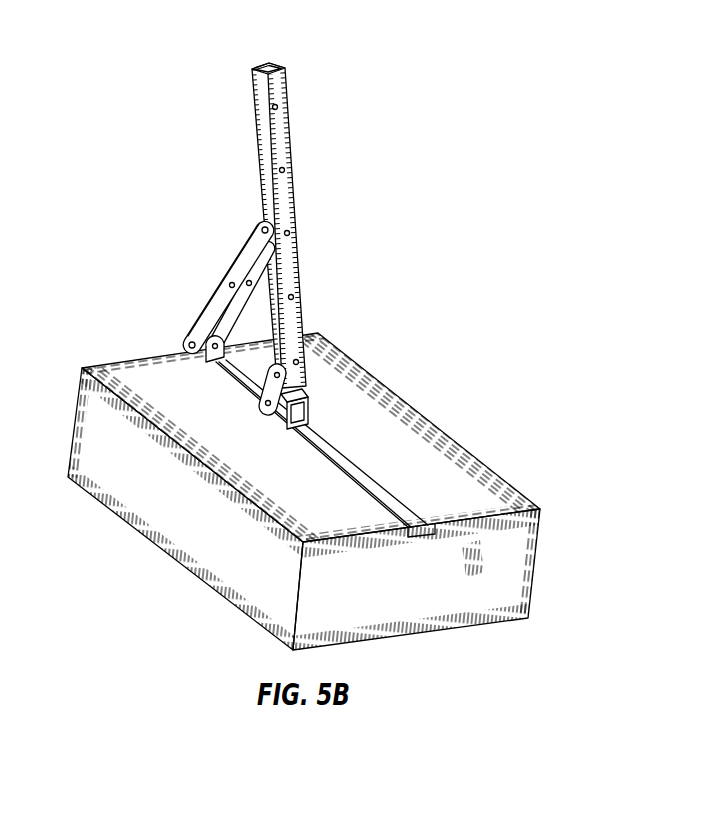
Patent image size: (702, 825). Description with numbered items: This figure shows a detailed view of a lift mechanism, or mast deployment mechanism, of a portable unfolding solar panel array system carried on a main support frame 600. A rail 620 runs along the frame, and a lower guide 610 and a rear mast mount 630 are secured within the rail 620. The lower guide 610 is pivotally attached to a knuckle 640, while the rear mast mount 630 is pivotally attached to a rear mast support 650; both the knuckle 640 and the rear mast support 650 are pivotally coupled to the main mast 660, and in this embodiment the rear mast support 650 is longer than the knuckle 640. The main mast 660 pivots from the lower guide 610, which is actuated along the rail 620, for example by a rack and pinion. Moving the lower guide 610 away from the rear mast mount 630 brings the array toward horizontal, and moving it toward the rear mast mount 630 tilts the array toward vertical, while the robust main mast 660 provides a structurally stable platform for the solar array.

The main support frame 600 is at (448, 450).
The lower guide 610 is at (305, 414).
The rail 620 is at (337, 456).
The rear mast mount 630 is at (209, 366).
The knuckle 640 is at (272, 413).
The rear mast support 650 is at (228, 272).
The main mast 660 is at (296, 152).